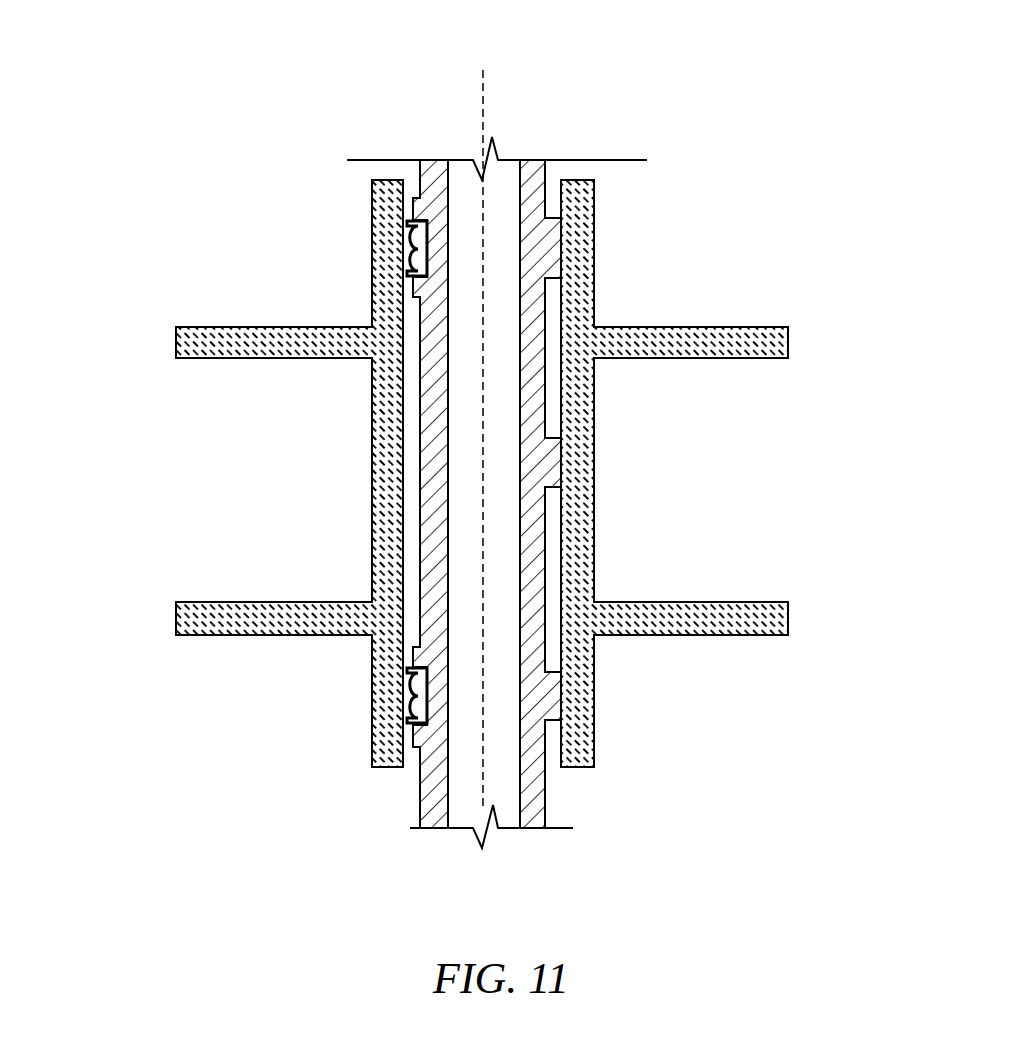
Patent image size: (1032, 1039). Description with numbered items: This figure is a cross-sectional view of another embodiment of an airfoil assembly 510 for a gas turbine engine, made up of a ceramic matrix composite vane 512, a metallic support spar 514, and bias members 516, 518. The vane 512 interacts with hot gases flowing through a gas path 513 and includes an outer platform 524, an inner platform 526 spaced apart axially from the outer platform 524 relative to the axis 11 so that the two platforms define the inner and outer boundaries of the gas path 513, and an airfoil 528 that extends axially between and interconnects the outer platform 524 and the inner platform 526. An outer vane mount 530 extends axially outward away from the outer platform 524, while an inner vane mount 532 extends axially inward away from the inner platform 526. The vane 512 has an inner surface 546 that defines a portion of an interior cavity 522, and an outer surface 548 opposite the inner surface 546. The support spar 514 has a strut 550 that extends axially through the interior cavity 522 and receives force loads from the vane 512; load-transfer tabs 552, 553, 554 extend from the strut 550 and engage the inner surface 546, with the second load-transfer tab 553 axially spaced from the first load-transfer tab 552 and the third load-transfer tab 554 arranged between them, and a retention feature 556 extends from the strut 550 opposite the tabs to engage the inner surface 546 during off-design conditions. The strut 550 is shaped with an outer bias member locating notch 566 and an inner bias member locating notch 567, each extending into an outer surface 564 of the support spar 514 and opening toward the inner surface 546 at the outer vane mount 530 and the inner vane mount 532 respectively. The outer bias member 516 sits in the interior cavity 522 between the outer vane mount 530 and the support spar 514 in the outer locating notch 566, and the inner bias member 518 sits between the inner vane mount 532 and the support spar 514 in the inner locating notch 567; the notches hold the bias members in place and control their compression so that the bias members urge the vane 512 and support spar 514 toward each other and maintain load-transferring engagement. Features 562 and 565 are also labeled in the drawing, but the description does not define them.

The airfoil assembly 510 is at (173, 136).
The axis 11 is at (483, 82).
The ceramic matrix composite vane 512 is at (727, 496).
The gas path 513 is at (232, 527).
The metallic support spar 514 is at (437, 148).
The outer bias member 516 is at (403, 238).
The inner bias member 518 is at (405, 715).
The interior cavity 522 is at (414, 758).
The outer platform 524 is at (792, 330).
The inner platform 526 is at (793, 630).
The airfoil 528 is at (598, 500).
The outer vane mount 530 is at (610, 252).
The inner vane mount 532 is at (600, 762).
The inner surface 546 is at (550, 396).
The outer surface 548 is at (596, 455).
The strut 550 is at (403, 448).
The first load-transfer tab 552 is at (551, 208).
The second load-transfer tab 553 is at (551, 490).
The third load-transfer tab 554 is at (566, 696).
The retention feature 556 is at (403, 291).
The tube wall portion 562 is at (545, 640).
The outer surface 564 is at (545, 593).
The tube bore 565 is at (508, 795).
The outer bias member locating notch 566 is at (437, 295).
The inner bias member locating notch 567 is at (432, 638).